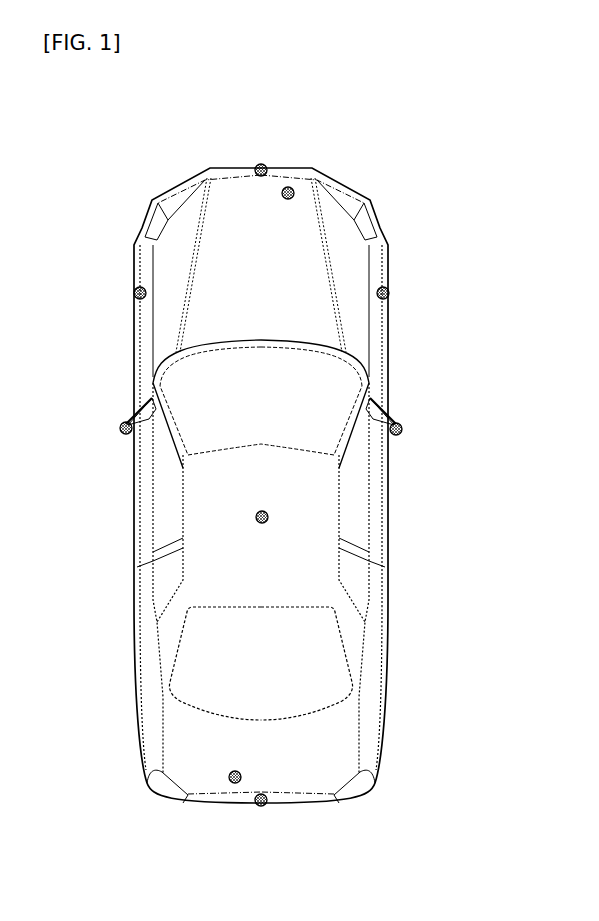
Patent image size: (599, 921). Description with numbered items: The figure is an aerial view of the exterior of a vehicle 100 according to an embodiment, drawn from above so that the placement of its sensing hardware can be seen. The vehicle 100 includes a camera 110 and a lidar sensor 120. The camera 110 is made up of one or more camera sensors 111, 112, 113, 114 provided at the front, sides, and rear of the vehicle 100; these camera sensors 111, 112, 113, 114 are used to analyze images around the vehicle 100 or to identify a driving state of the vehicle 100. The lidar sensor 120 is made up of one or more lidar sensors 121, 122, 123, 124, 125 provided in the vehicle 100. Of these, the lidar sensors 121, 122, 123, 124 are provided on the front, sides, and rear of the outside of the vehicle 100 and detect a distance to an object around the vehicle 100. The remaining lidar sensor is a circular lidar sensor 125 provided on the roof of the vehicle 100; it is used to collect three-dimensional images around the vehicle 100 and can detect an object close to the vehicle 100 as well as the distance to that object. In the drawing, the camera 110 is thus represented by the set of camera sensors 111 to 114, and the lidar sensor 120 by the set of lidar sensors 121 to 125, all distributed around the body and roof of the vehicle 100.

The vehicle 100 is at (462, 354).
The camera 110 is at (298, 487).
The camera sensor 111 is at (260, 164).
The camera sensor 112 is at (134, 293).
The camera sensor 113 is at (389, 293).
The camera sensor 114 is at (262, 806).
The lidar sensor 120 is at (290, 500).
The lidar sensor 121 is at (290, 187).
The lidar sensor 122 is at (120, 429).
The lidar sensor 123 is at (402, 430).
The lidar sensor 124 is at (232, 783).
The circular lidar sensor 125 is at (262, 511).